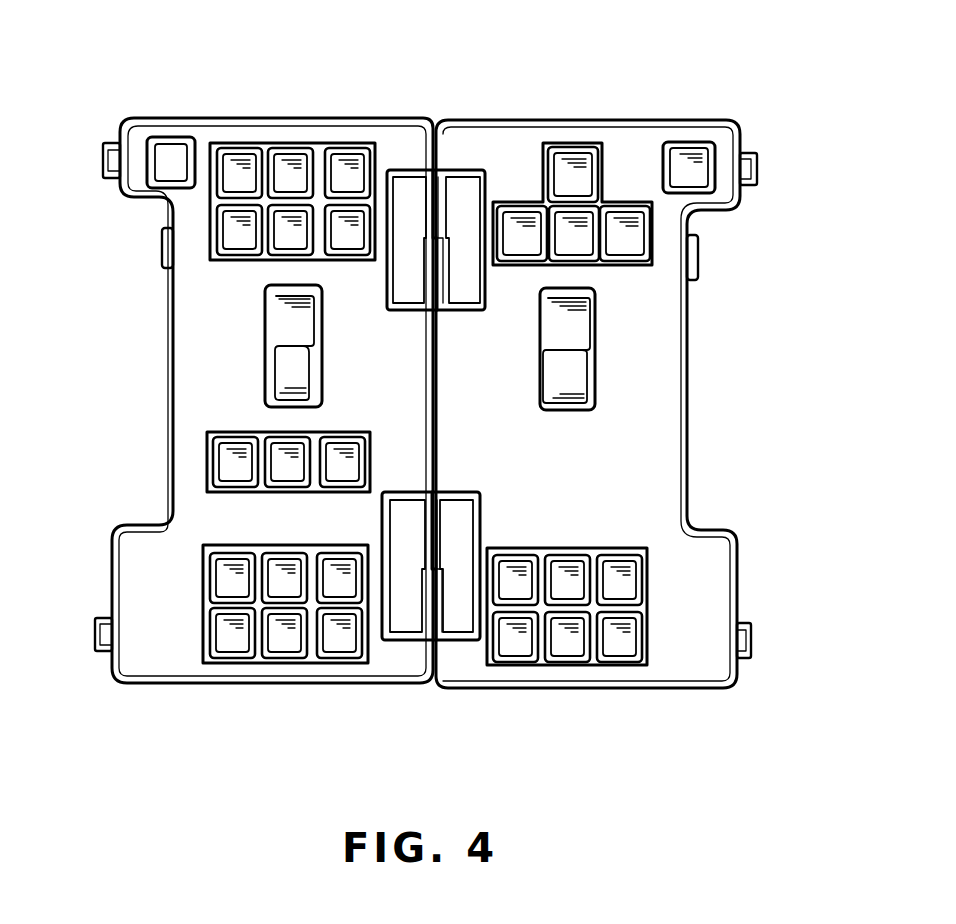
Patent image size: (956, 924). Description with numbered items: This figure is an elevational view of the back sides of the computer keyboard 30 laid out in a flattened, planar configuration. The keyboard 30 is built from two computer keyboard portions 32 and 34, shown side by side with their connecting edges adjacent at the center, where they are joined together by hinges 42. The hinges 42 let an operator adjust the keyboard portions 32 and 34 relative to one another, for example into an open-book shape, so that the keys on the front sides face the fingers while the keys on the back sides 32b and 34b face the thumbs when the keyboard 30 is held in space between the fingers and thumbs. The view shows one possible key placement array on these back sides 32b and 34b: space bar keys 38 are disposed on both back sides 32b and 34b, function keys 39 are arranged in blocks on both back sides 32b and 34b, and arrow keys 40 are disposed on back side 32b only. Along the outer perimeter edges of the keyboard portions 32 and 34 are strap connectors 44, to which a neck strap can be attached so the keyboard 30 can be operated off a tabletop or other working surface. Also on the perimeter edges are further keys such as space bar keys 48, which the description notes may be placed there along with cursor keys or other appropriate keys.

The computer keyboard 30 is at (172, 712).
The computer keyboard portion 32 is at (740, 119).
The back side of keyboard portion 32 32b is at (622, 148).
The computer keyboard portion 34 is at (124, 118).
The back side of keyboard portion 34 34b is at (247, 130).
The space bar keys 38 is at (322, 355).
The function keys 39 is at (277, 545).
The arrow keys 40 is at (605, 265).
The hinges 42 is at (402, 185).
The strap connectors 44 is at (104, 168).
The space bar keys 48 is at (162, 254).